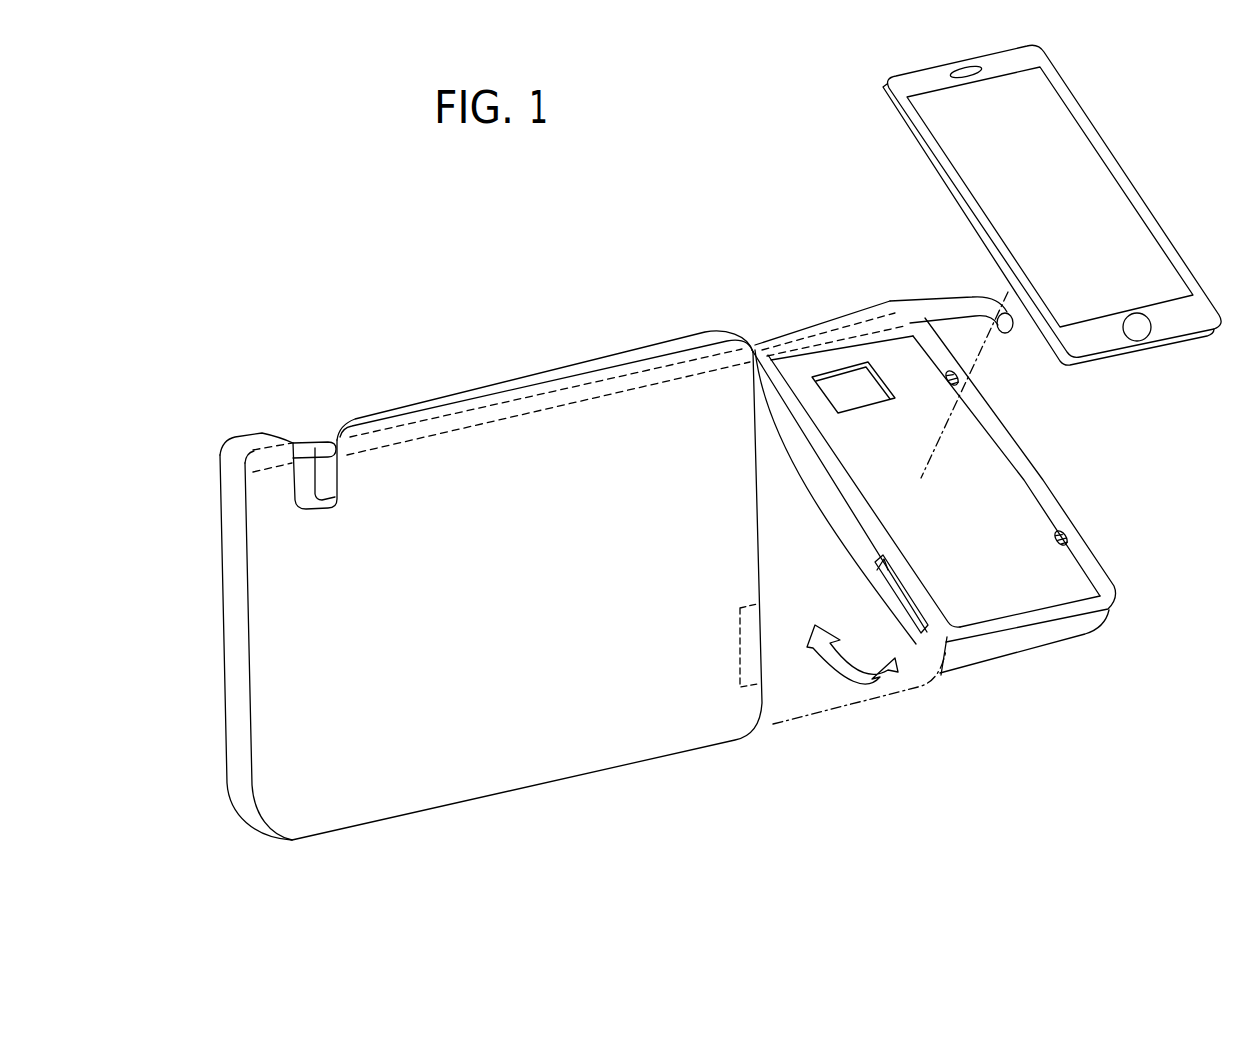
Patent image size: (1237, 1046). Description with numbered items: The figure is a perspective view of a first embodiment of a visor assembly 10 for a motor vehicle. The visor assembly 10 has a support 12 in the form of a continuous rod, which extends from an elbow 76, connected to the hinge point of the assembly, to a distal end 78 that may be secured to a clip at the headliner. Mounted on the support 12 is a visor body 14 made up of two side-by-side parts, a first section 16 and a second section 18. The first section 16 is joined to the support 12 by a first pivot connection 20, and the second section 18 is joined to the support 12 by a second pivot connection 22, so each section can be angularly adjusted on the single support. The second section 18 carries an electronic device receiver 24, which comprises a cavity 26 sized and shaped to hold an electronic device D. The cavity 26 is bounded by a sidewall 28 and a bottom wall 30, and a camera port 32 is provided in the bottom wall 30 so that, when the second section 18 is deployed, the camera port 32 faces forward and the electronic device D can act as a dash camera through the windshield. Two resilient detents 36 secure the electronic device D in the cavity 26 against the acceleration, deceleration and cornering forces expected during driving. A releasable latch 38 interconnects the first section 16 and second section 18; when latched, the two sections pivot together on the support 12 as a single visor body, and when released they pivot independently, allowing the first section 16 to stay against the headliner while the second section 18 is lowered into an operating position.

The visor assembly 10 is at (292, 306).
The support 12 is at (440, 415).
The visor body 14 is at (777, 763).
The first section 16 is at (349, 794).
The second section 18 is at (1047, 636).
The first pivot connection 20 is at (553, 387).
The second pivot connection 22 is at (813, 332).
The electronic device receiver 24 is at (1045, 452).
The cavity 26 is at (1090, 586).
The sidewall 28 is at (993, 451).
The bottom wall 30 is at (984, 528).
The camera port 32 is at (852, 374).
The resilient detent 36 is at (952, 383).
The releasable latch 38 is at (781, 668).
The elbow 76 is at (983, 296).
The distal end 78 is at (308, 452).
The electronic device D is at (1160, 227).